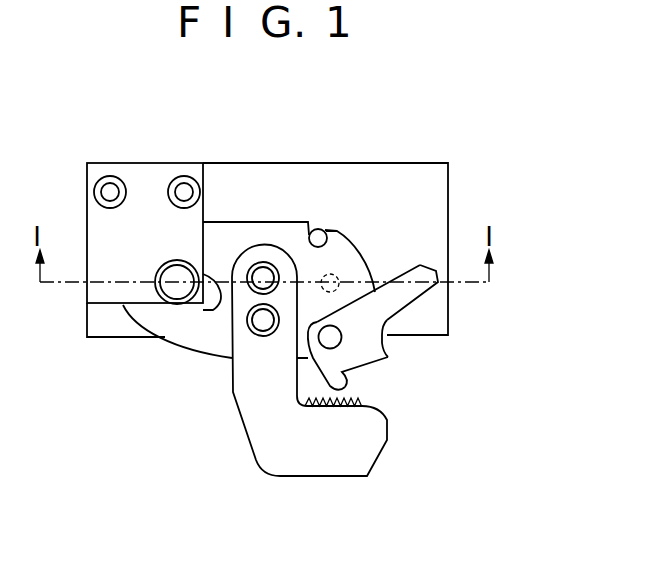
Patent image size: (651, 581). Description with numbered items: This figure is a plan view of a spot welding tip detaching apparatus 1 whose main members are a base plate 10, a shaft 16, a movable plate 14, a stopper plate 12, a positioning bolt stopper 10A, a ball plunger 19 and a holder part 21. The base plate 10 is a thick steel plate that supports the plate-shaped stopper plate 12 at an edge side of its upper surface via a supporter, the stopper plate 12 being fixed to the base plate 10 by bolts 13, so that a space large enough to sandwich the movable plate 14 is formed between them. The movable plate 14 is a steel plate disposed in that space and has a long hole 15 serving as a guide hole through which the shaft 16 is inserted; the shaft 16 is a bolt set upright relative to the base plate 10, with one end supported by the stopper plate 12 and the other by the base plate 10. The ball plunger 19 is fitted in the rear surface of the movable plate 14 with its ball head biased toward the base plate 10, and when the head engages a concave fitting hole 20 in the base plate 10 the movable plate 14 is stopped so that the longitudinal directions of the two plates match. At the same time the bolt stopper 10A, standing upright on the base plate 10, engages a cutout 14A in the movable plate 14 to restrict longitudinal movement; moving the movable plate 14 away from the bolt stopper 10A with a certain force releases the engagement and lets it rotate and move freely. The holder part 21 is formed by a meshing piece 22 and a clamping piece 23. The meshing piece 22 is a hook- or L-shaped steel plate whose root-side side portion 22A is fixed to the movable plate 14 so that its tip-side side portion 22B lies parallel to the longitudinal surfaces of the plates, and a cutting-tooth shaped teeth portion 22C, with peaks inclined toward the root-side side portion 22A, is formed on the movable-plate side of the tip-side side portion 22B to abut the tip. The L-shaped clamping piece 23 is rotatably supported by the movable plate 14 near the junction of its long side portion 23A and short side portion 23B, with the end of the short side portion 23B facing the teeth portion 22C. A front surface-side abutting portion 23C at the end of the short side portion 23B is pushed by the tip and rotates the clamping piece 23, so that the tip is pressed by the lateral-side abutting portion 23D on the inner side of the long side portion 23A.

The spot welding tip detaching apparatus 1 is at (448, 163).
The base plate 10 is at (224, 180).
The positioning bolt stopper 10A is at (322, 229).
The stopper plate 12 is at (143, 182).
The bolts 13 is at (103, 190).
The movable plate 14 is at (243, 231).
The cutout 14A is at (316, 229).
The long hole 15 is at (192, 298).
The shaft 16 is at (160, 298).
The ball plunger 19 is at (340, 278).
The fitting hole 20 is at (375, 205).
The holder part 21 is at (412, 439).
The meshing piece 22 is at (272, 455).
The root-side side portion 22A is at (237, 375).
The tip-side side portion 22B is at (340, 460).
The teeth portion 22C is at (367, 402).
The clamping piece 23 is at (392, 298).
The long side portion 23A is at (430, 262).
The short side portion 23B is at (327, 363).
The front surface-side abutting portion 23C is at (343, 383).
The lateral-side abutting portion 23D is at (388, 357).